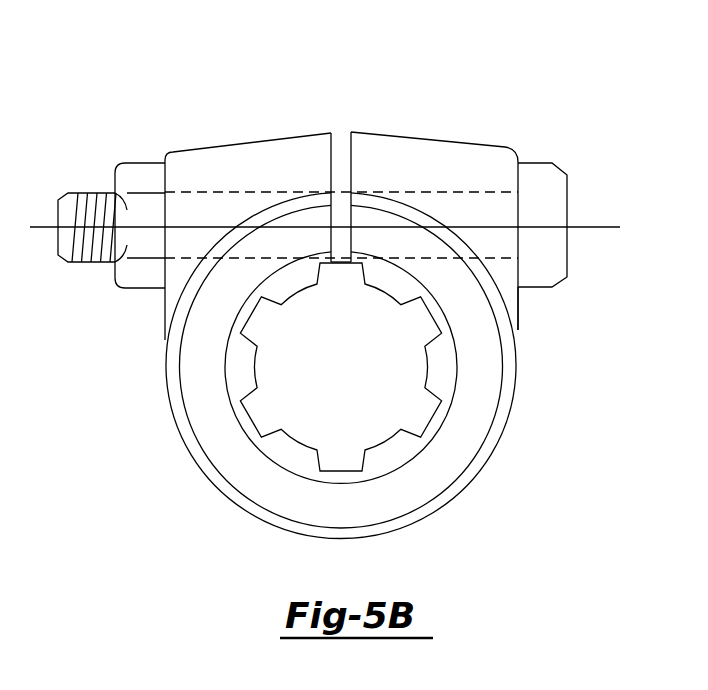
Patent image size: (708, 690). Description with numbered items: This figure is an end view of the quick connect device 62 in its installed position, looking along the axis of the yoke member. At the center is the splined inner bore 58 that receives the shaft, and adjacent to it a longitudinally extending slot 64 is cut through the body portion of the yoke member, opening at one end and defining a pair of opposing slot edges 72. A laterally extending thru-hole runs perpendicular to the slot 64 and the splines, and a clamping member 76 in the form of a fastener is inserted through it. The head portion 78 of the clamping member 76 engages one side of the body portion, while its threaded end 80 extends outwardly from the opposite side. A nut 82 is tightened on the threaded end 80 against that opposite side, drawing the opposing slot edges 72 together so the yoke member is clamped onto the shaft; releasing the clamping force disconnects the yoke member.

The splined inner bore 58 is at (385, 402).
The device 62 is at (191, 123).
The slot 64 is at (343, 172).
The slot edges 72 is at (349, 152).
The clamping member 76 is at (560, 190).
The head portion 78 is at (525, 288).
The threaded end 80 is at (87, 193).
The nut 82 is at (150, 275).